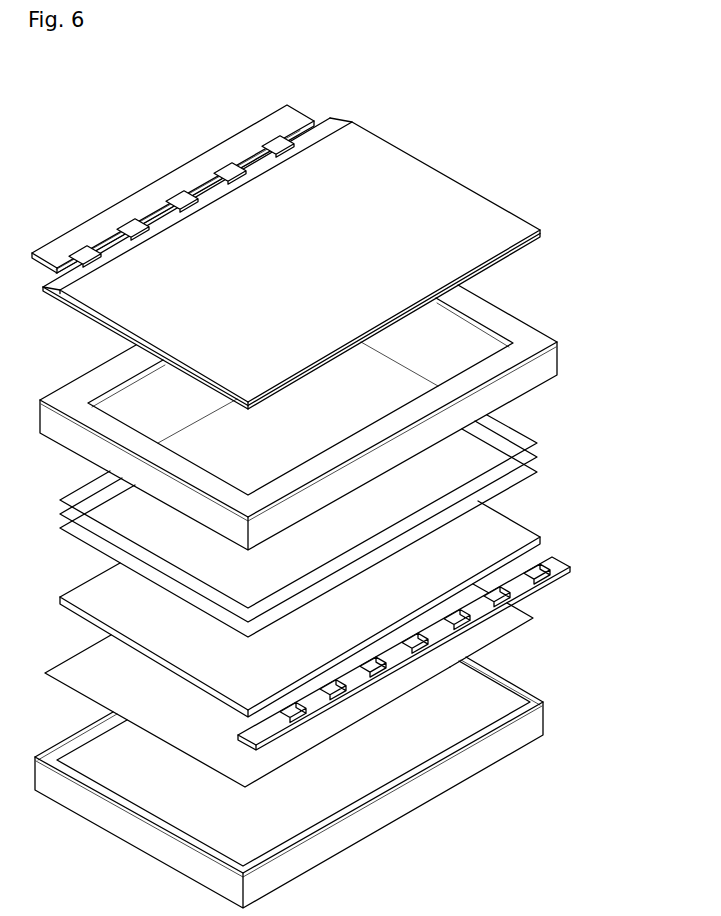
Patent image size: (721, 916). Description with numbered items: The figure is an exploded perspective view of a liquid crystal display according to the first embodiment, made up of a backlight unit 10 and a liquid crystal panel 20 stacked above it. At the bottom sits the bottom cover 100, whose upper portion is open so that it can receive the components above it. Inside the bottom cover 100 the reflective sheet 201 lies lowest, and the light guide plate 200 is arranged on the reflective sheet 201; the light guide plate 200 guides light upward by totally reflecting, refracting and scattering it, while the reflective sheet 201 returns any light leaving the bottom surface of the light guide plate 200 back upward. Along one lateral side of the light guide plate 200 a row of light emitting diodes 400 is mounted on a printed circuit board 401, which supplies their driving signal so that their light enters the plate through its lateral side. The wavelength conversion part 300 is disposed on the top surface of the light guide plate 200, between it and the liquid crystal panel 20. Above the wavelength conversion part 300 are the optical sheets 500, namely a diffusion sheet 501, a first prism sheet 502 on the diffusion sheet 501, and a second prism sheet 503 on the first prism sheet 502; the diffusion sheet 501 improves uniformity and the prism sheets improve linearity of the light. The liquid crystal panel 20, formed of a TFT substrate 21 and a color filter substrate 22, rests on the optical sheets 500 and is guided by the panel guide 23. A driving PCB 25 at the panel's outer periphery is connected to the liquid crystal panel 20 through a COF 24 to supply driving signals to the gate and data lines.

The backlight unit 10 is at (359, 661).
The liquid crystal panel 20 is at (291, 227).
The TFT substrate 21 is at (398, 82).
The color filter substrate 22 is at (375, 137).
The panel guide 23 is at (553, 357).
The COF (chip on film) 24 is at (270, 133).
The driving PCB 25 is at (52, 246).
The bottom cover 100 is at (339, 782).
The light guide plate 200 is at (331, 658).
The reflective sheet 201 is at (522, 617).
The wavelength conversion part 300 is at (530, 520).
The light emitting diodes 400 is at (427, 651).
The printed circuit board 401 is at (560, 558).
The optical sheets 500 is at (350, 526).
The diffusion sheet 501 is at (533, 467).
The first prism sheet 502 is at (533, 455).
The second prism sheet 503 is at (533, 443).